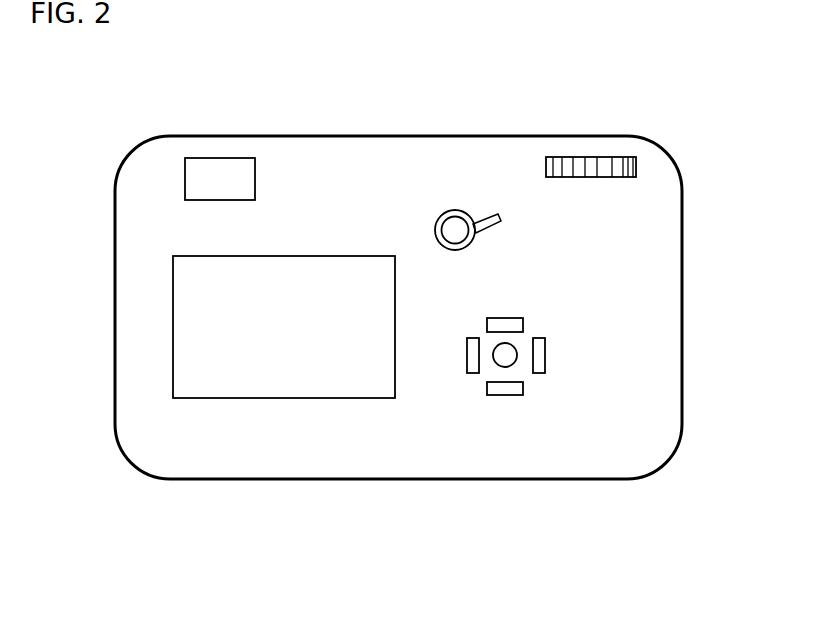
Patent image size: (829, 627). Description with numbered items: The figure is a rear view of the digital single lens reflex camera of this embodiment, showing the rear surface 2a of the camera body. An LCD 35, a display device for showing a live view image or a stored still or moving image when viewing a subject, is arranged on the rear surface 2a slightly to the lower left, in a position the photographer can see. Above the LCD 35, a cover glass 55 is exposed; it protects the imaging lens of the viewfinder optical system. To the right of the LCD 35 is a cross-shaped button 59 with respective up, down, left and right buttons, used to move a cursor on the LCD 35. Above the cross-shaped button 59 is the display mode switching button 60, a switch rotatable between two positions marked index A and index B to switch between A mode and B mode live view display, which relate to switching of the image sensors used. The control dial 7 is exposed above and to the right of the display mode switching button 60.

The rear surface 2a is at (324, 157).
The cover glass 55 is at (203, 158).
The LCD 35 is at (215, 313).
The display mode switching button 60 is at (443, 213).
The control dial 7 is at (637, 168).
The cross-shaped button 59 is at (545, 357).